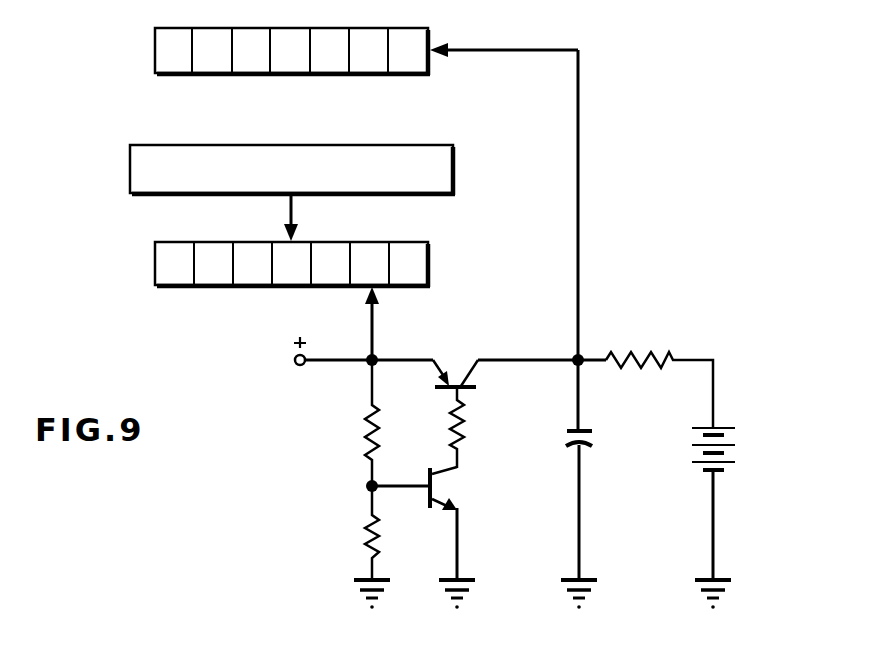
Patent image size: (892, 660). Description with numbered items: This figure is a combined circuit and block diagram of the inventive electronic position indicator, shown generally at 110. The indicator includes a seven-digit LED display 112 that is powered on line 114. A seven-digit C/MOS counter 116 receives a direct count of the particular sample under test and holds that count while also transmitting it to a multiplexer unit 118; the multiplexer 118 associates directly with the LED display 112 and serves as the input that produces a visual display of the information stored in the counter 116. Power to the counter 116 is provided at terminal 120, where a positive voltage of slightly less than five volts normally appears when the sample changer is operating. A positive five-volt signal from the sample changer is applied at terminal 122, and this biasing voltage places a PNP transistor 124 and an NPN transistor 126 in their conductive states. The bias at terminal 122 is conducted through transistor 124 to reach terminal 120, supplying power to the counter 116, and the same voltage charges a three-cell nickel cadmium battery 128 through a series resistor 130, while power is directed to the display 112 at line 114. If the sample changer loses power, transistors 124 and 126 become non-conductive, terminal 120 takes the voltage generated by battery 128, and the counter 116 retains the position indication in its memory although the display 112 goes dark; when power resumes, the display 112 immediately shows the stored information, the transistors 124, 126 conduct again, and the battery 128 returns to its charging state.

The electronic position indicator 110 is at (612, 146).
The seven-digit LED display 112 is at (155, 262).
The line 114 is at (373, 328).
The seven-digit C/MOS counter 116 is at (430, 33).
The multiplexer unit 118 is at (455, 160).
The terminal 120 is at (579, 221).
The terminal 122 is at (291, 365).
The PNP transistor 124 is at (465, 352).
The NPN transistor 126 is at (470, 481).
The three-cell nickel cadmium battery 128 is at (718, 426).
The series resistor 130 is at (648, 352).